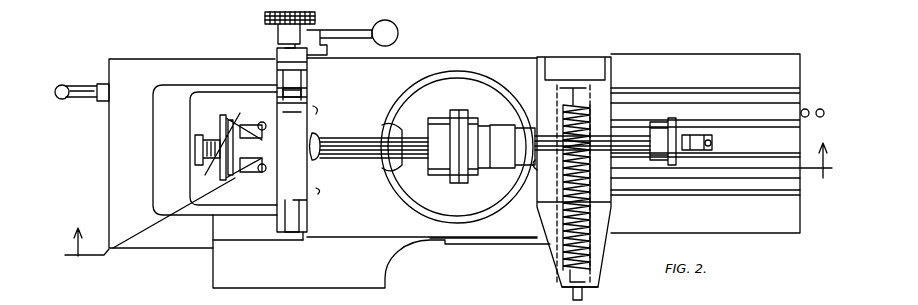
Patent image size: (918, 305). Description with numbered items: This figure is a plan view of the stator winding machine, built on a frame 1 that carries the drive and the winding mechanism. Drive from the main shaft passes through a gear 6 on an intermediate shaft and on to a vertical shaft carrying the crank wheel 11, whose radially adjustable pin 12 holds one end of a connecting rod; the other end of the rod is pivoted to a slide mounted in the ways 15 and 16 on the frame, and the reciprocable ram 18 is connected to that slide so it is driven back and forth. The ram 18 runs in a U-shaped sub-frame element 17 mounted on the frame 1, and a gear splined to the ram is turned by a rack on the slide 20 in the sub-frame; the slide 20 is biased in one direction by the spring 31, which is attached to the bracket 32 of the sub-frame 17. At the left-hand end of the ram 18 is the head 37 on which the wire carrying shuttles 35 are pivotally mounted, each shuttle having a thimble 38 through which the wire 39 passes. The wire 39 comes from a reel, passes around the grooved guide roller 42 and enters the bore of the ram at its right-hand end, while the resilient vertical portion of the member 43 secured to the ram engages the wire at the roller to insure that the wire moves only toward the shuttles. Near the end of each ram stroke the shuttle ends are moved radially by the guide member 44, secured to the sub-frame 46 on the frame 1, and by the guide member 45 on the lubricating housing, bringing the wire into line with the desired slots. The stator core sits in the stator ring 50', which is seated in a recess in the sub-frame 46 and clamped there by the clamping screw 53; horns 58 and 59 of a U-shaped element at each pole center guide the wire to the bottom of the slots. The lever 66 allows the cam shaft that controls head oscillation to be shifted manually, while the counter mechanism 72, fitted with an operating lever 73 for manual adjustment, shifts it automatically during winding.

The frame 1 is at (400, 240).
The gear 6 is at (448, 213).
The crank wheel 11 is at (410, 212).
The radially adjustable pin 12 is at (398, 128).
The way 15 is at (760, 183).
The way 16 is at (744, 95).
The U-shaped sub-frame element 17 is at (537, 232).
The reciprocable ram 18 is at (350, 140).
The slide 20 is at (590, 100).
The spring 31 is at (594, 248).
The bracket 32 is at (560, 290).
The wire carrying shuttle 35 is at (207, 161).
The head 37 is at (270, 131).
The thimble 38 is at (236, 118).
The wire 39 is at (256, 120).
The grooved guide roller 42 is at (690, 150).
The member 43 is at (712, 143).
The guide member 44 is at (192, 126).
The guide member 45 is at (460, 118).
The sub-frame 46 is at (162, 188).
The stator ring 50' is at (327, 221).
The clamping screw 53 is at (266, 20).
The horn 58 is at (278, 95).
The horn 59 is at (317, 110).
The lever 66 is at (396, 30).
The counter mechanism 72 is at (157, 58).
The operating lever 73 is at (70, 85).